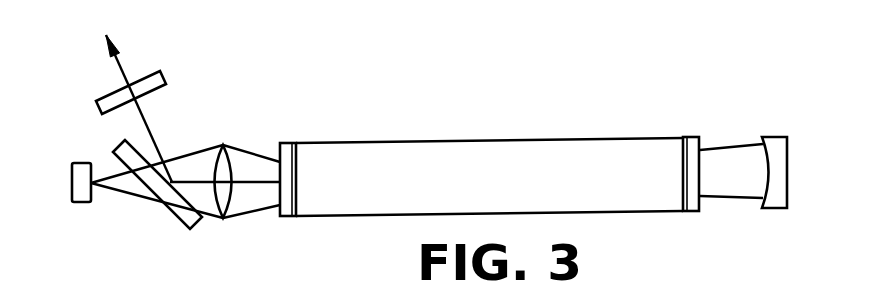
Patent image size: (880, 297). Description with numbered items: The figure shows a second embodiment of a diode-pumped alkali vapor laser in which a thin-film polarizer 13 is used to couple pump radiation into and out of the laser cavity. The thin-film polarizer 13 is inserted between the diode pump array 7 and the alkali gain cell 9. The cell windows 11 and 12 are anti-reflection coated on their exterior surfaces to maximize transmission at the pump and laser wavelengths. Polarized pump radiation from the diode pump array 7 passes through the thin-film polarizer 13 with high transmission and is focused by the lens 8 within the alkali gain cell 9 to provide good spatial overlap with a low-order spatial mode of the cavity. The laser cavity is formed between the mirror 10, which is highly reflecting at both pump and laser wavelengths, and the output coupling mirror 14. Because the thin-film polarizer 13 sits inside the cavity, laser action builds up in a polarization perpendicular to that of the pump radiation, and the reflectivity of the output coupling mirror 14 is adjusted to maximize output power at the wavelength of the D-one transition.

The diode pump array 7 is at (72, 170).
The lens 8 is at (223, 145).
The alkali gain cell 9 is at (483, 141).
The mirror 10 is at (773, 135).
The cell window 11 is at (290, 143).
The cell window 12 is at (690, 135).
The thin-film polarizer 13 is at (178, 216).
The output coupling mirror 14 is at (166, 83).